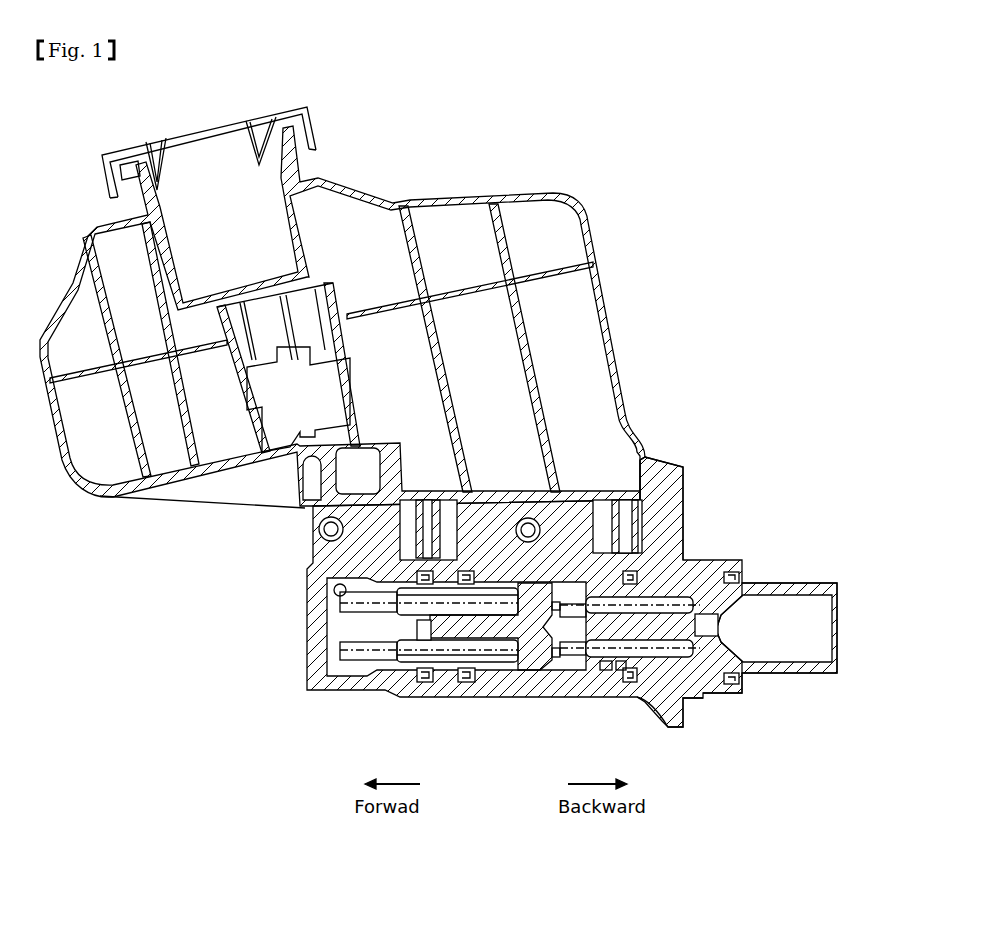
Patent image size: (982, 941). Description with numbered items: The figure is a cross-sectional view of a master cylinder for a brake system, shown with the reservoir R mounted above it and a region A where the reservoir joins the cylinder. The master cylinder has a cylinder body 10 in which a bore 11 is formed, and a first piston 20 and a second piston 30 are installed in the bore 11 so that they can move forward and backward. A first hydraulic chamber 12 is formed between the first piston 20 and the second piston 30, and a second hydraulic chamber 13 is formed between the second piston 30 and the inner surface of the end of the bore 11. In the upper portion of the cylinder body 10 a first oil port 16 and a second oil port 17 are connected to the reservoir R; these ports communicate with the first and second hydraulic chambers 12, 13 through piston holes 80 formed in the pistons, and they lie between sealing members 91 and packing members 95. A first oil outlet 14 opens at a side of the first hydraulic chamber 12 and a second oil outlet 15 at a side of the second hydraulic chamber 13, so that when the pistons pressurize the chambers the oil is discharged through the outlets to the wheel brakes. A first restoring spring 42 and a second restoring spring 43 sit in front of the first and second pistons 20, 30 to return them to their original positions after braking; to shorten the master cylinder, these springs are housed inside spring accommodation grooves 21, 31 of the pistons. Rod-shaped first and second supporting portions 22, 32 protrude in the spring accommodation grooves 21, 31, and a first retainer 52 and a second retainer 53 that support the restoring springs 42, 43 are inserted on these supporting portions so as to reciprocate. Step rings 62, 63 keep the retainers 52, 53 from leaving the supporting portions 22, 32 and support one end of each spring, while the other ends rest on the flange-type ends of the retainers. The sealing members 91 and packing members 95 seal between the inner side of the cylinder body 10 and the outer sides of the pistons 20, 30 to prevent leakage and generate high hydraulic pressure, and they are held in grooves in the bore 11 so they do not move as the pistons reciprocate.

The reservoir R is at (622, 337).
The mounting portion A is at (656, 510).
The cylinder body 10 is at (760, 552).
The bore 11 is at (334, 592).
The first hydraulic chamber 12 is at (580, 690).
The second hydraulic chamber 13 is at (340, 672).
The first oil outlet 14 is at (485, 578).
The second oil outlet 15 is at (350, 583).
The first oil port 16 is at (655, 575).
The second oil port 17 is at (443, 578).
The first piston 20 is at (800, 583).
The spring accommodation groove 21 is at (728, 640).
The first supporting portion 22 is at (676, 722).
The second piston 30 is at (562, 660).
The spring accommodation groove 31 is at (508, 660).
The second supporting portion 32 is at (495, 660).
The first restoring spring 42 is at (700, 696).
The second restoring spring 43 is at (539, 678).
The first retainer 52 is at (607, 688).
The second retainer 53 is at (355, 670).
The step ring 62 is at (625, 690).
The step ring 63 is at (422, 686).
The piston holes 80 is at (735, 612).
The sealing members 91 is at (632, 688).
The packing members 95 is at (736, 686).